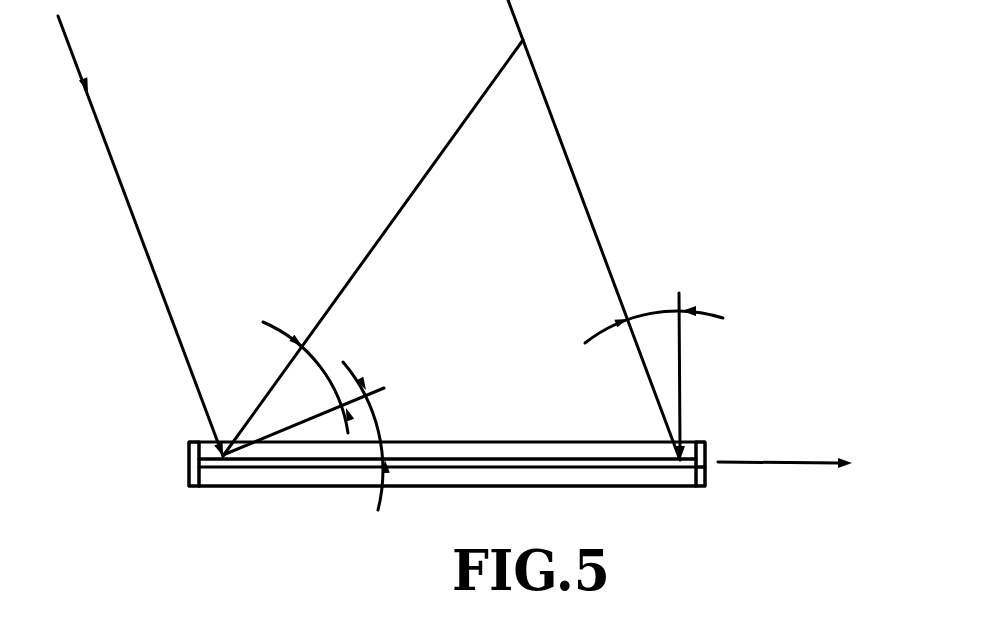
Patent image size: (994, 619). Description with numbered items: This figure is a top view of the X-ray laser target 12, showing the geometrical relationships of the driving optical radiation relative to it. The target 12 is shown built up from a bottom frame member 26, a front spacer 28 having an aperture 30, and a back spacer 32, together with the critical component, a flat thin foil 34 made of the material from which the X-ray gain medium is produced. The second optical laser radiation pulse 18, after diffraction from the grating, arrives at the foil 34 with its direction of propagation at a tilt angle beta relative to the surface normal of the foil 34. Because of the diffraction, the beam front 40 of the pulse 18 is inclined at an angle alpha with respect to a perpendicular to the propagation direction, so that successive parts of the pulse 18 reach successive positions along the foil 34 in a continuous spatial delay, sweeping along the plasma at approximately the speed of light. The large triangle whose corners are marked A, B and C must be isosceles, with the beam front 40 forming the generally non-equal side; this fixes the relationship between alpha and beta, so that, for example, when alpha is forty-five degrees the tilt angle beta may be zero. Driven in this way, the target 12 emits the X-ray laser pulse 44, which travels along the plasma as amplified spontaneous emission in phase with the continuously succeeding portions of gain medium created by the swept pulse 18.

The X-ray laser target 12 is at (663, 487).
The second optical laser radiation pulse 18 is at (110, 153).
The bottom frame member 26 is at (282, 473).
The front spacer 28 is at (707, 480).
The aperture 30 is at (707, 452).
The back spacer 32 is at (188, 467).
The flat thin foil 34 is at (488, 458).
The beam front 40 is at (437, 163).
The X-ray laser pulse 44 is at (800, 463).
The triangle corner A is at (528, 40).
The triangle corner B is at (693, 443).
The triangle corner C is at (222, 443).